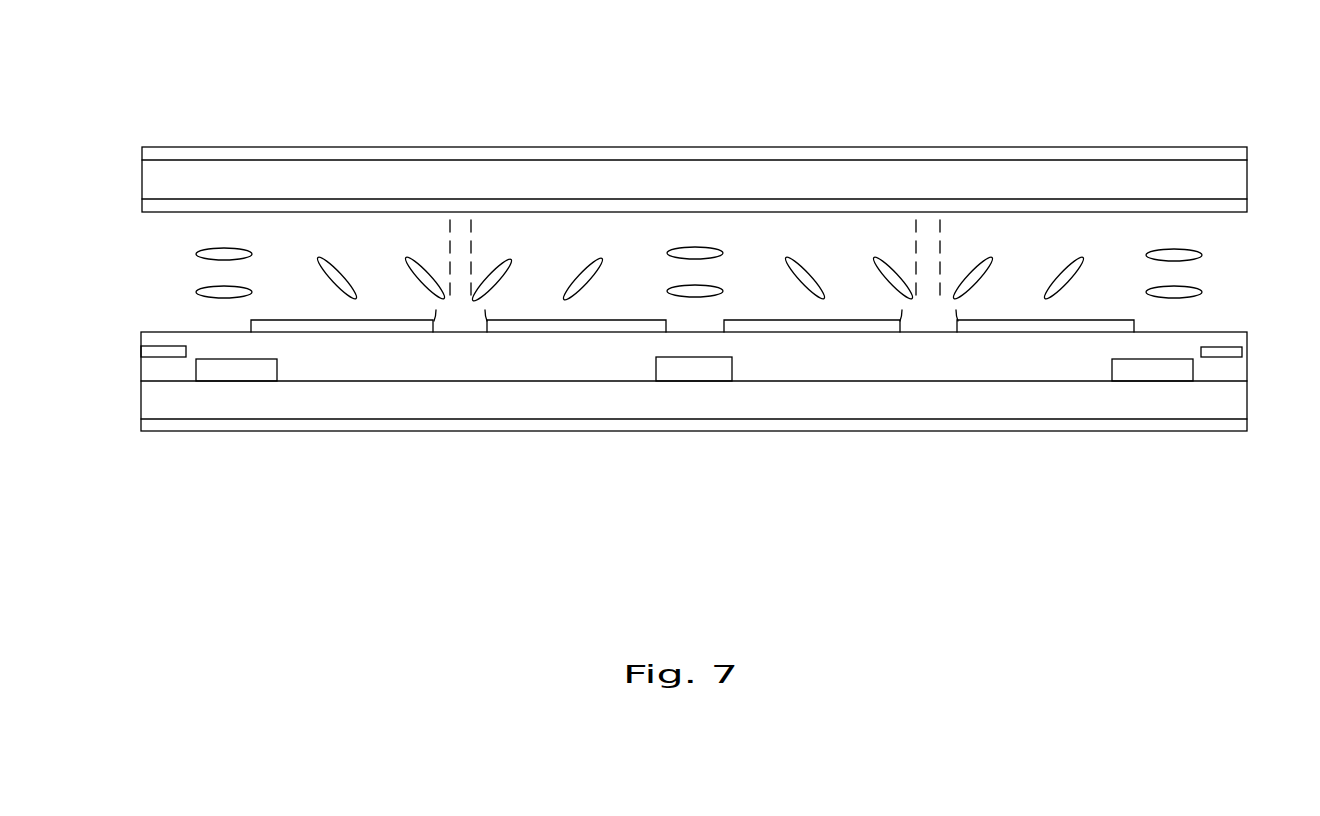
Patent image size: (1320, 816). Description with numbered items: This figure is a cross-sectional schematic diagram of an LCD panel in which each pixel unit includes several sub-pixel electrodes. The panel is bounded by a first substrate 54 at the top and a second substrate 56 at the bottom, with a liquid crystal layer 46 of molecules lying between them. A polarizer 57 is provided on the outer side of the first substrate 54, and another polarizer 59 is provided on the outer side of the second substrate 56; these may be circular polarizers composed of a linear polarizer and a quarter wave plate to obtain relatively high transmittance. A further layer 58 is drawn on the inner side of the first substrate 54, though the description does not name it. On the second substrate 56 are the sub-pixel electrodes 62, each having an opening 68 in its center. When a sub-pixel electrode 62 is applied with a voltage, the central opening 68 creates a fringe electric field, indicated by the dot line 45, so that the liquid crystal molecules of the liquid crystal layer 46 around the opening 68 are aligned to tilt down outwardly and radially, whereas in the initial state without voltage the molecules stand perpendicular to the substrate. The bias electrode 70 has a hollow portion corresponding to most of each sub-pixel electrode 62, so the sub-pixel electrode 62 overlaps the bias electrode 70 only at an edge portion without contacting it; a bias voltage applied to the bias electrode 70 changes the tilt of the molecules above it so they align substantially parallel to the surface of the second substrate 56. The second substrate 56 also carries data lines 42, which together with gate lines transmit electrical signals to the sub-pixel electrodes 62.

The data line 42 is at (152, 351).
The dot line 45 is at (473, 245).
The liquid crystal layer 46 is at (1190, 290).
The first substrate 54 is at (1243, 184).
The second substrate 56 is at (1242, 400).
The polarizer 57 is at (1178, 153).
The common electrode 58 is at (1243, 206).
The polarizer 59 is at (1120, 425).
The sub-pixel electrode 62 is at (348, 327).
The opening 68 is at (452, 314).
The bias electrode 70 is at (250, 372).